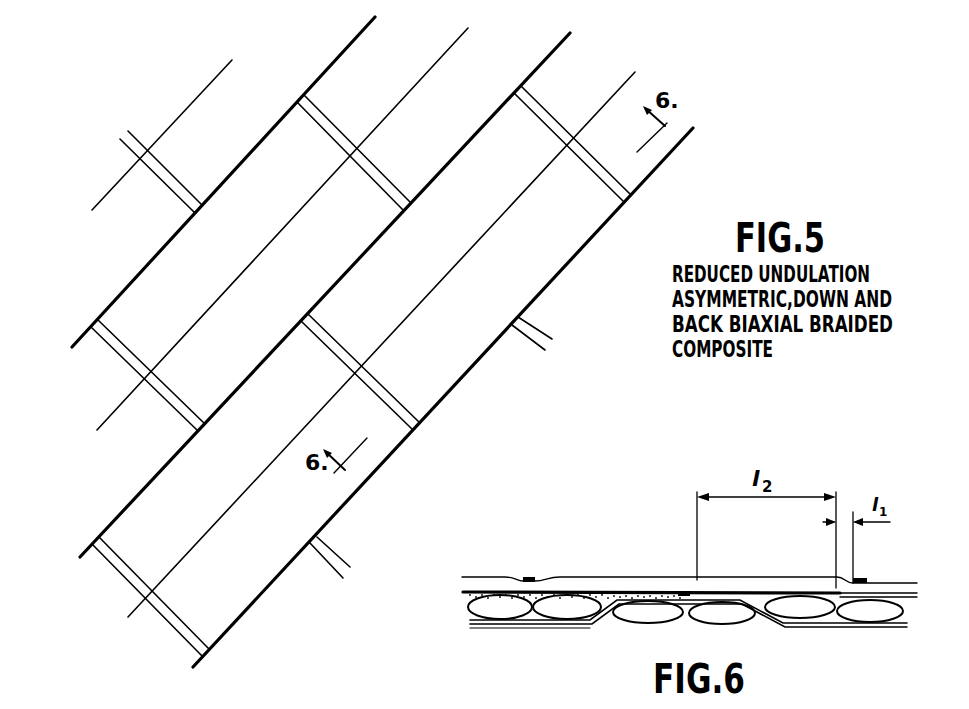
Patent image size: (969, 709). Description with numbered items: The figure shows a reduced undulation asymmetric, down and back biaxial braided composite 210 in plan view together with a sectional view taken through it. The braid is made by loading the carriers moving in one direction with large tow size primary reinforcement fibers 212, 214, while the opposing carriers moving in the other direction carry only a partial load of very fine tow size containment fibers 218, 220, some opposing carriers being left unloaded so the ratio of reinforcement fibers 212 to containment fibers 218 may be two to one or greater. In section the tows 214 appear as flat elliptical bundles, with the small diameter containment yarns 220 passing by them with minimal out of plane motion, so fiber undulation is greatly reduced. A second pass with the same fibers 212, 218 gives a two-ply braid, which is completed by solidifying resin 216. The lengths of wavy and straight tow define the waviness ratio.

In FIG. 5, the asymmetric down and back biaxial braided composite 210 is at (556, 324).
In FIG. 6, the asymmetric down and back biaxial braided composite 210 is at (660, 528).
In FIG. 5, the primary reinforcement fibers 212 is at (193, 538).
In FIG. 6, the primary reinforcement fibers 212 is at (915, 557).
In FIG. 6, the large tow size reinforcing fibers 214 is at (870, 613).
In FIG. 6, the resin 216 is at (610, 610).
In FIG. 5, the containment fibers 218 is at (107, 335).
In FIG. 6, the containment fibers 218 is at (535, 575).
In FIG. 6, the containment yarns 220 is at (572, 625).